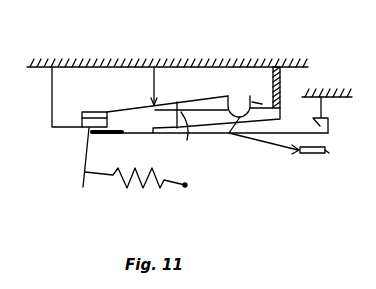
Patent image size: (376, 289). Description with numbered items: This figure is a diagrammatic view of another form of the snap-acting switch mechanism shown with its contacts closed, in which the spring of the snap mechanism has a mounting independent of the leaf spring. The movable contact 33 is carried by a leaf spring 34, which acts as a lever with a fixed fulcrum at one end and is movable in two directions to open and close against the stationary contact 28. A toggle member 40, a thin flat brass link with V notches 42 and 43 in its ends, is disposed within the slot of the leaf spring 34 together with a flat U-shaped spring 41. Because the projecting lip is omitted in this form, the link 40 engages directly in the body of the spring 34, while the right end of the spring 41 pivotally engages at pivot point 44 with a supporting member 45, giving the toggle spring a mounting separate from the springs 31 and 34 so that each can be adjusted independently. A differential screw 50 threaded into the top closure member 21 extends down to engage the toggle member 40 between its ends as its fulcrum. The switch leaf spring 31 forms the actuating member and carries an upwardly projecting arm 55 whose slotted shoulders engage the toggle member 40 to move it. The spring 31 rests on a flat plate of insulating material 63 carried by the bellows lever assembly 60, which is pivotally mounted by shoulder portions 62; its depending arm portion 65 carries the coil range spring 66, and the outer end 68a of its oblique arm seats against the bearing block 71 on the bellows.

The top closure member 21 is at (52, 67).
The stationary contact 28 is at (80, 126).
The leaf spring 31 is at (272, 120).
The contact 33 is at (82, 116).
The leaf spring 34 is at (160, 109).
The toggle member 40 is at (193, 101).
The U-shaped spring 41 is at (229, 134).
The V notch 42 is at (125, 103).
The V notch 43 is at (225, 98).
The pivot point 44 is at (252, 102).
The supporting member 45 is at (272, 76).
The differential screw 50 is at (147, 67).
The upwardly projecting arm 55 is at (193, 135).
The bellows lever assembly 60 is at (328, 124).
The shoulder portions 62 is at (323, 98).
The flat plate of insulating material 63 is at (123, 134).
The depending arm portion 65 is at (82, 181).
The coil range spring 66 is at (136, 188).
The outer end of arm 68a is at (296, 152).
The bearing block 71 is at (326, 154).